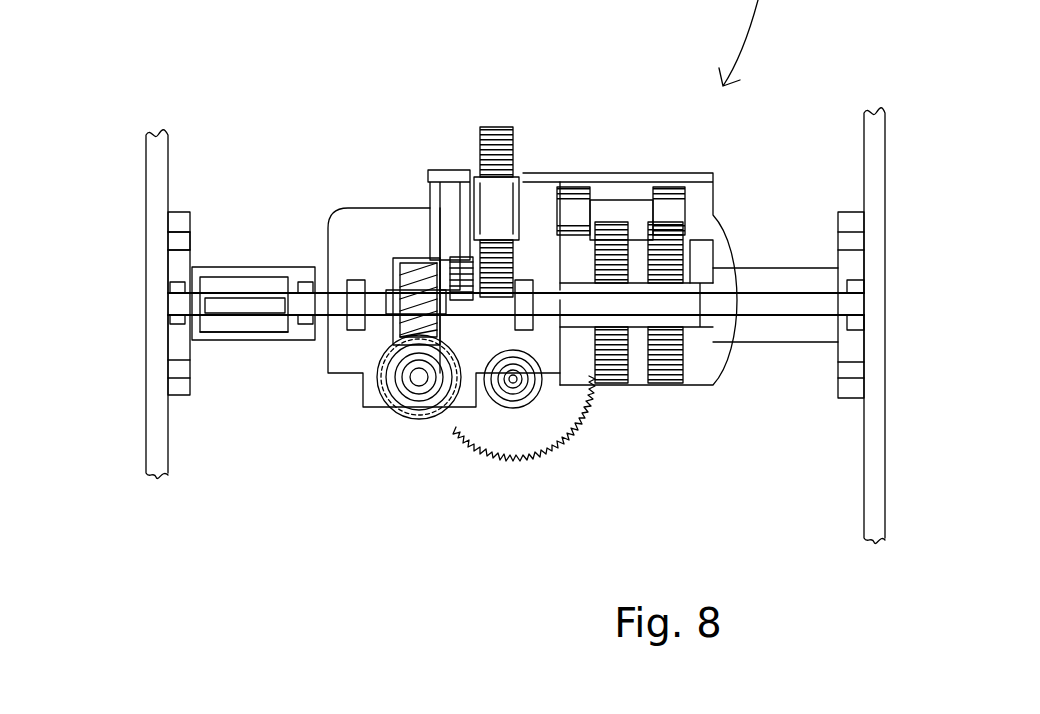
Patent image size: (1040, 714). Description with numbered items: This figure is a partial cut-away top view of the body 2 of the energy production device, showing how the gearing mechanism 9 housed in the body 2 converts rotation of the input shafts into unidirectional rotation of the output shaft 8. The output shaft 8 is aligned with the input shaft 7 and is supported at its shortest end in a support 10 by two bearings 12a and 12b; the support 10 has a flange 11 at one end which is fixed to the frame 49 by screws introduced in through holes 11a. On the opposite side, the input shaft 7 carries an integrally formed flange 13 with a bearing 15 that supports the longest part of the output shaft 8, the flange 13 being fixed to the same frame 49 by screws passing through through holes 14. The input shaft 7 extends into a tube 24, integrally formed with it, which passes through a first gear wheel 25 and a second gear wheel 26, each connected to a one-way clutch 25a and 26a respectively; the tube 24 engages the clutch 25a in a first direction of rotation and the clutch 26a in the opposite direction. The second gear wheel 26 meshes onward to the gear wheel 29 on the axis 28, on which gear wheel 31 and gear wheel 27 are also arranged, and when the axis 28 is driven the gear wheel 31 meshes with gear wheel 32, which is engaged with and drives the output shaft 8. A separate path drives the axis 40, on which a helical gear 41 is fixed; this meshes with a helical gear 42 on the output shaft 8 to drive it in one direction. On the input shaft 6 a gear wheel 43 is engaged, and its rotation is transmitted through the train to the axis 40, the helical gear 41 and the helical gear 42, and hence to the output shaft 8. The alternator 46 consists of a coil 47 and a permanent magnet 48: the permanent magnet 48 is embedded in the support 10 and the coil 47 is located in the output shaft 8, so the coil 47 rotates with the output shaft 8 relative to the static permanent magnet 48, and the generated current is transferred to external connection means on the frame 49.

The body 2 is at (715, 228).
The input shaft 6 is at (513, 381).
The input shaft 7 is at (790, 268).
The output shaft 8 is at (815, 388).
The gearing mechanism 9 is at (535, 167).
The support 10 is at (248, 268).
The flange 11 is at (188, 218).
The through holes 11a is at (180, 240).
The bearing 12a is at (170, 328).
The bearing 12b is at (303, 325).
The flange 13 is at (855, 212).
The through holes 14 is at (945, 373).
The bearing 15 is at (860, 330).
The tube 24 is at (697, 316).
The first gear wheel 25 is at (663, 385).
The one-way clutch 25a is at (703, 280).
The second gear wheel 26 is at (612, 385).
The one-way clutch 26a is at (596, 246).
The gear wheel 27 is at (671, 206).
The axis 28 is at (640, 200).
The gear wheel 29 is at (577, 277).
The gear wheel 31 is at (502, 127).
The gear wheel 32 is at (465, 402).
The axis 40 is at (418, 381).
The helical gear 41 is at (386, 405).
The helical gear 42 is at (417, 262).
The gear wheel 43 is at (541, 440).
The alternator 46 is at (225, 334).
The coil 47 is at (268, 308).
The permanent magnet 48 is at (225, 285).
The frame 49 is at (950, 490).